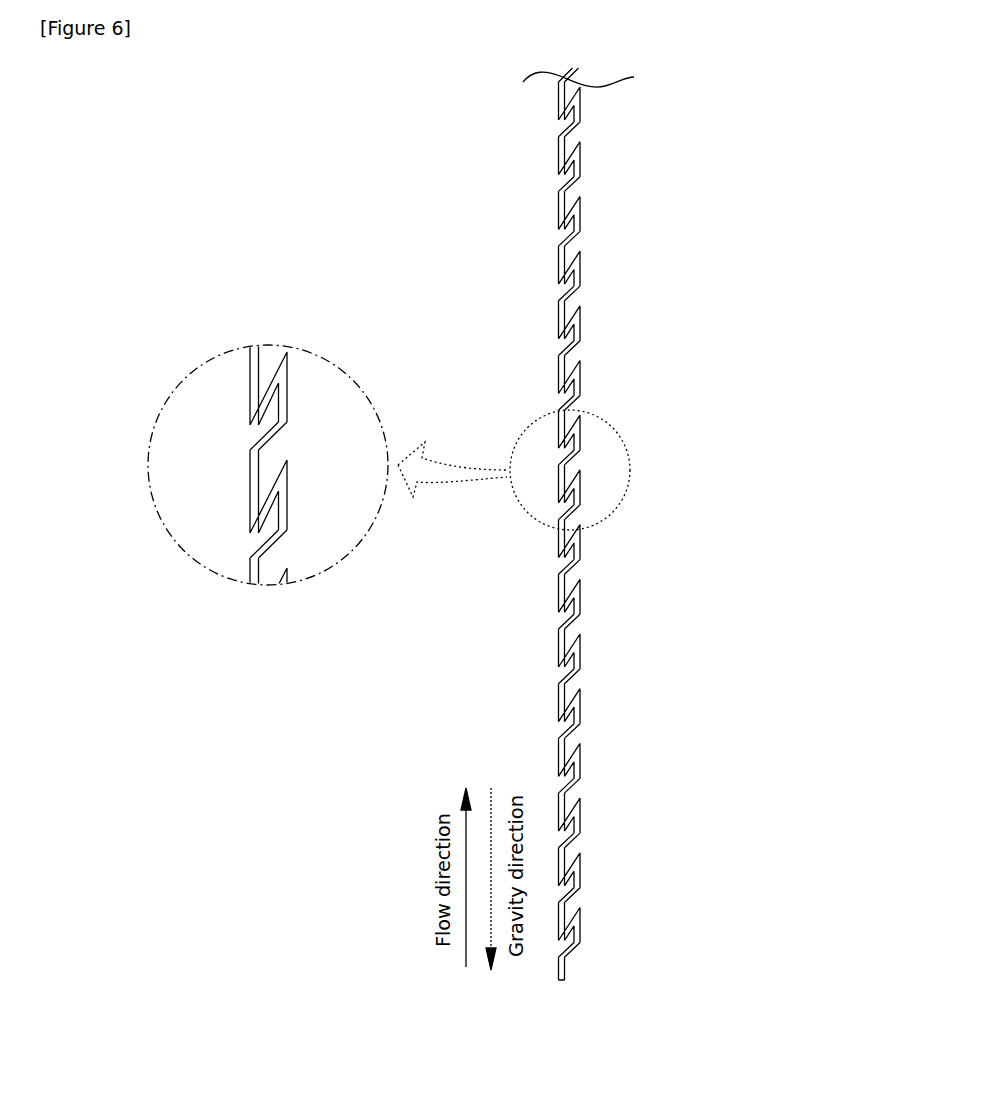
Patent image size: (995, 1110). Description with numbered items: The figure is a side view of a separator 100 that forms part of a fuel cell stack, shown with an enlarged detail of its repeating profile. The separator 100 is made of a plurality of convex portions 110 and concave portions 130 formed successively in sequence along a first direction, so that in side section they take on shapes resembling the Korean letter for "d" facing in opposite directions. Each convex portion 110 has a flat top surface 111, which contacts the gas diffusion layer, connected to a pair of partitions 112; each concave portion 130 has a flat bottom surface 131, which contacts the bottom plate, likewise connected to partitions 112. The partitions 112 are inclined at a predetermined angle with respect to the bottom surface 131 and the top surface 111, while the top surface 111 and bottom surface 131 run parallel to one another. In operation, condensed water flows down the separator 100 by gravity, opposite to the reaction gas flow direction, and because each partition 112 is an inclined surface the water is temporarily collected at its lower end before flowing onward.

The separator 100 is at (701, 86).
The convex portion 110 is at (585, 211).
The top surface 111 is at (287, 512).
The partition 112 is at (250, 420).
The concave portion 130 is at (556, 208).
The bottom surface 131 is at (256, 511).